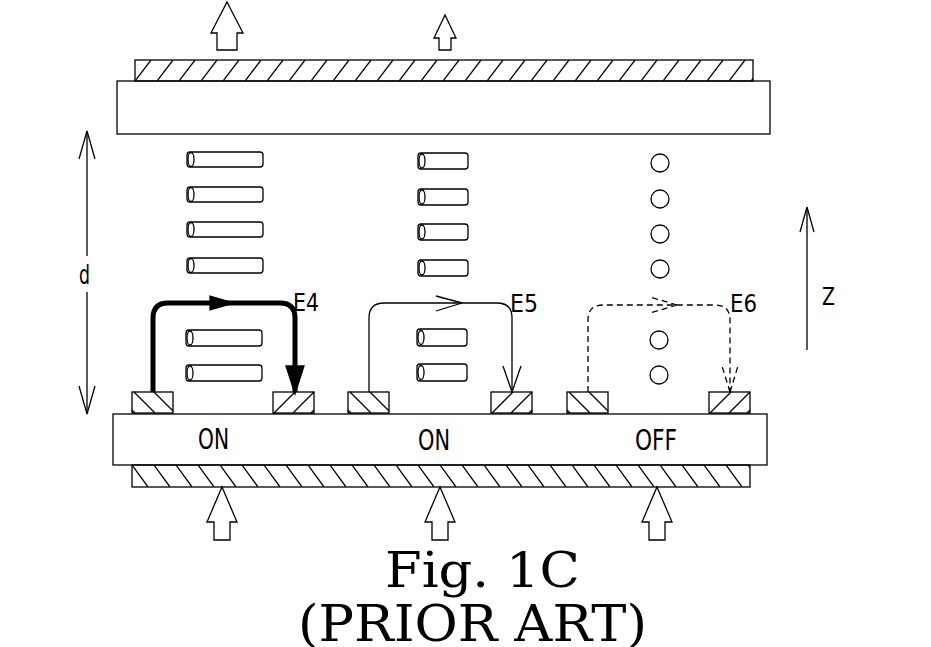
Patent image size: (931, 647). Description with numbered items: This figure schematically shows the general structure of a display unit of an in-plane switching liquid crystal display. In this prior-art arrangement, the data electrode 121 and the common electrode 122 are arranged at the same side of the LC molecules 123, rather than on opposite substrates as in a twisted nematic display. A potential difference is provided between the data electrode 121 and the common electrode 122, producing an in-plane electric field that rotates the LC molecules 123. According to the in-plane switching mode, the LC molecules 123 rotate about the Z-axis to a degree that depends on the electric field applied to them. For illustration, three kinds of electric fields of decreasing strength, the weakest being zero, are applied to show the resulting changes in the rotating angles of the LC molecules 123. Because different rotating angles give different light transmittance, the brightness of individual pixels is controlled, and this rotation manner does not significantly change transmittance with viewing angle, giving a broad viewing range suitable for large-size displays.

The data electrode 121 is at (618, 403).
The common electrode 122 is at (772, 407).
The LC molecules 123 is at (680, 230).